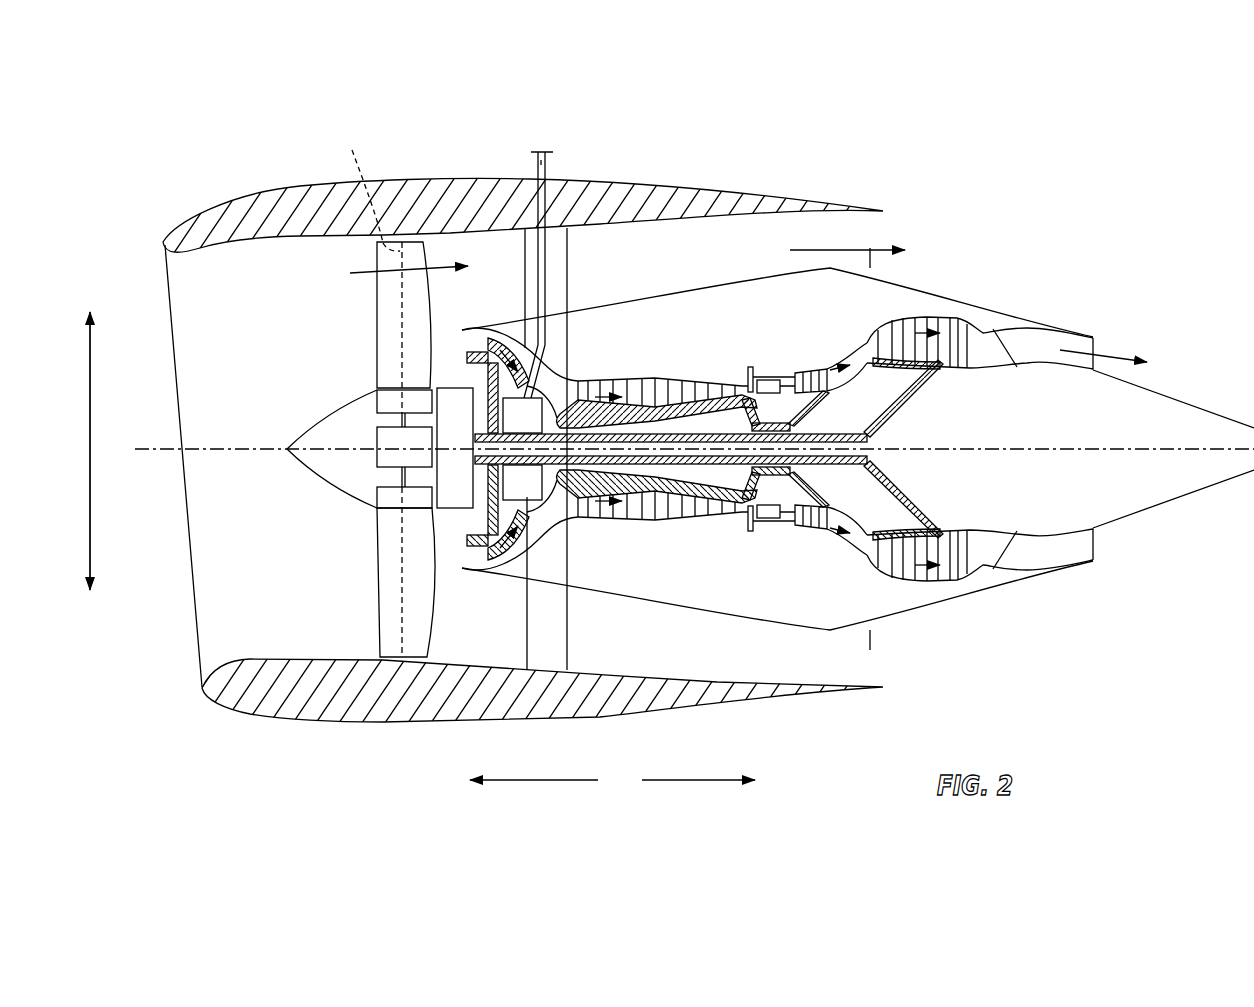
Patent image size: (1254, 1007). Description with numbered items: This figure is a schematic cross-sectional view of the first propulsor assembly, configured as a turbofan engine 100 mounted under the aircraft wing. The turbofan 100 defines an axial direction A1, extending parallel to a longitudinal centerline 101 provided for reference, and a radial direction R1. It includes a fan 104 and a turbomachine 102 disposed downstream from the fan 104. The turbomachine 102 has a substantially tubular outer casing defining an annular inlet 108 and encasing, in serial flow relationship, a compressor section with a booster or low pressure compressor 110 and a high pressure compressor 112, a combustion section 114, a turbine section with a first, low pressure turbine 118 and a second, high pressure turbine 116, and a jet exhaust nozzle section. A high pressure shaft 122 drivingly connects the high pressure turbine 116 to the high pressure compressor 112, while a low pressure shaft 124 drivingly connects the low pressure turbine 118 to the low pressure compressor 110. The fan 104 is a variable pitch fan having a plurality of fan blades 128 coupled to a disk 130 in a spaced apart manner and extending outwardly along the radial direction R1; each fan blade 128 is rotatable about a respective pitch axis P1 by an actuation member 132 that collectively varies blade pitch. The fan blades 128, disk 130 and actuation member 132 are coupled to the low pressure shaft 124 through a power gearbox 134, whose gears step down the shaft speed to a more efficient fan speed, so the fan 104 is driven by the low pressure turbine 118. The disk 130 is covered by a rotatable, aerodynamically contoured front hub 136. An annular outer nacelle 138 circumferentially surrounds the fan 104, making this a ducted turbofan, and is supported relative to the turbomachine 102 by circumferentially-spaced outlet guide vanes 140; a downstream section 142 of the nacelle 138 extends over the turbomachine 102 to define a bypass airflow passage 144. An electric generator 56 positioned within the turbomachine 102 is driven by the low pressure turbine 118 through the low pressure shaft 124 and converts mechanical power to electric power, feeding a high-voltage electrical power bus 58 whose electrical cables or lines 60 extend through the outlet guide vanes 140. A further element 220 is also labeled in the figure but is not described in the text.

The turbofan engine 100 is at (965, 205).
The longitudinal centerline 101 is at (1035, 447).
The turbomachine 102 is at (688, 273).
The fan 104 is at (290, 270).
The annular inlet 108 is at (467, 565).
The low pressure compressor 110 is at (508, 568).
The high pressure compressor 112 is at (598, 500).
The combustion section 114 is at (768, 512).
The high pressure turbine 116 is at (868, 518).
The low pressure turbine 118 is at (951, 578).
The high pressure shaft 122 is at (770, 372).
The low pressure shaft 124 is at (848, 430).
The fan blades 128 is at (373, 593).
The disk 130 is at (395, 402).
The actuation member 132 is at (380, 438).
The power gearbox 134 is at (441, 360).
The front hub 136 is at (300, 463).
The outer nacelle 138 is at (423, 721).
The outlet guide vanes 140 is at (567, 260).
The downstream section of the nacelle 142 is at (797, 197).
The bypass airflow passage 144 is at (755, 264).
The electric generator 56 is at (531, 488).
The electrical power bus 58 is at (521, 156).
The electrical cables or lines 60 is at (552, 168).
The exhaust nozzle 220 is at (1012, 560).
The pitch axis P1 is at (357, 190).
The radial direction R1 is at (93, 451).
The axial direction A1 is at (612, 782).